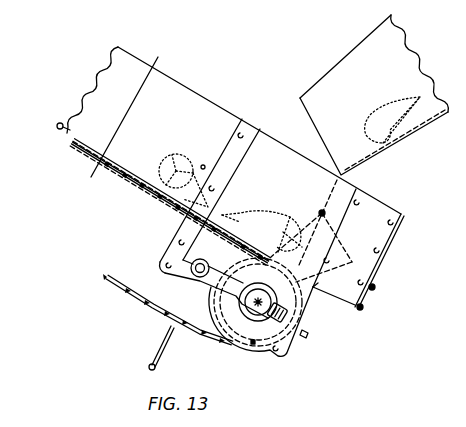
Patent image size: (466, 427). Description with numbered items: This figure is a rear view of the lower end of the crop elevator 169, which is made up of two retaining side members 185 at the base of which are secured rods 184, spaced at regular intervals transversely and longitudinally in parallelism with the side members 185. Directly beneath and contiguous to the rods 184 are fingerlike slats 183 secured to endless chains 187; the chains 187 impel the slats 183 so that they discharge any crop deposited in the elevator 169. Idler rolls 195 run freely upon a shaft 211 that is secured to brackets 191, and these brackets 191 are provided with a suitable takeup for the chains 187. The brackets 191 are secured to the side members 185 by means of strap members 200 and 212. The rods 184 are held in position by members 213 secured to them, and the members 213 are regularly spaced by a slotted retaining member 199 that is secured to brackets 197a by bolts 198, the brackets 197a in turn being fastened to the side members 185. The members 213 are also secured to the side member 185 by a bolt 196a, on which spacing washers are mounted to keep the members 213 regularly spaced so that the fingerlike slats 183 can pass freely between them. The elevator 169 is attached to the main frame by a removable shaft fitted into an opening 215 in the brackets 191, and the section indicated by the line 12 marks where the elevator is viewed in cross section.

The section line 12- 12 is at (152, 53).
The elevator 169 is at (201, 78).
The rods 184 is at (62, 116).
The retaining side members 185 is at (214, 117).
The strap member 200 is at (251, 132).
The bolt 196a is at (322, 211).
The strap member 212 is at (357, 207).
The brackets 197a is at (391, 243).
The bolts 198 is at (375, 286).
The slotted retaining member 199 is at (365, 304).
The members 213 is at (337, 303).
The brackets 191 is at (297, 341).
The idler rolls 195 is at (246, 344).
The fingerlike slats 183 is at (162, 355).
The endless chains 187 is at (153, 320).
The opening 215 is at (196, 273).
The shaft 211 is at (233, 305).